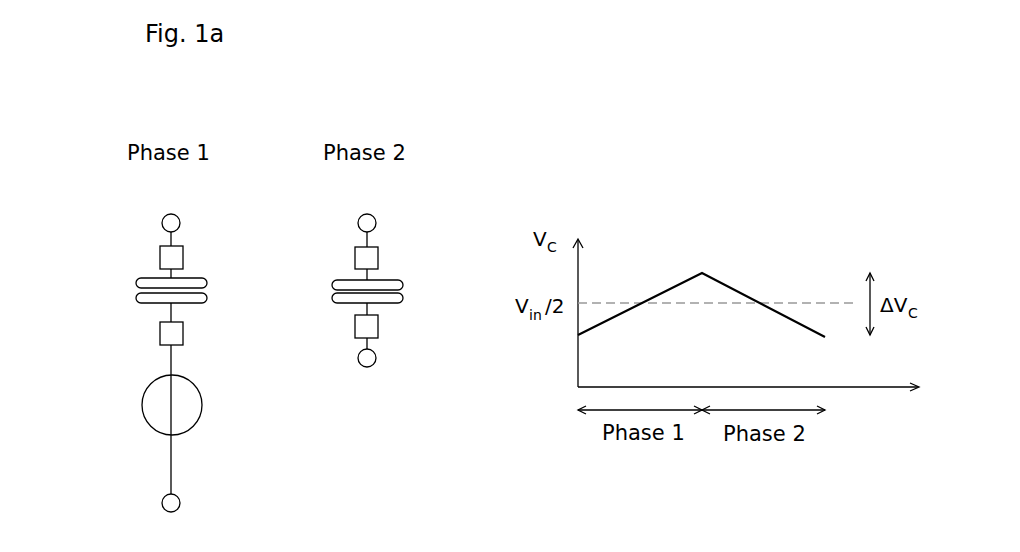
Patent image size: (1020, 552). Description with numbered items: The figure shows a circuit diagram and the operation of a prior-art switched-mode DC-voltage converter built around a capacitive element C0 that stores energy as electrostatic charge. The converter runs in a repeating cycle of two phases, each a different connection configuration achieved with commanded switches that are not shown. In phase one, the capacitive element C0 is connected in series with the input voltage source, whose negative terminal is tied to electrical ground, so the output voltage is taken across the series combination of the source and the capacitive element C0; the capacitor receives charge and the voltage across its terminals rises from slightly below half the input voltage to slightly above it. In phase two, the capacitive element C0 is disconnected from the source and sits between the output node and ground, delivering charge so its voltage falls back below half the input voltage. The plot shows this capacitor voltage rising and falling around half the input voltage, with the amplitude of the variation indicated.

The capacitive element C0 is at (193, 281).